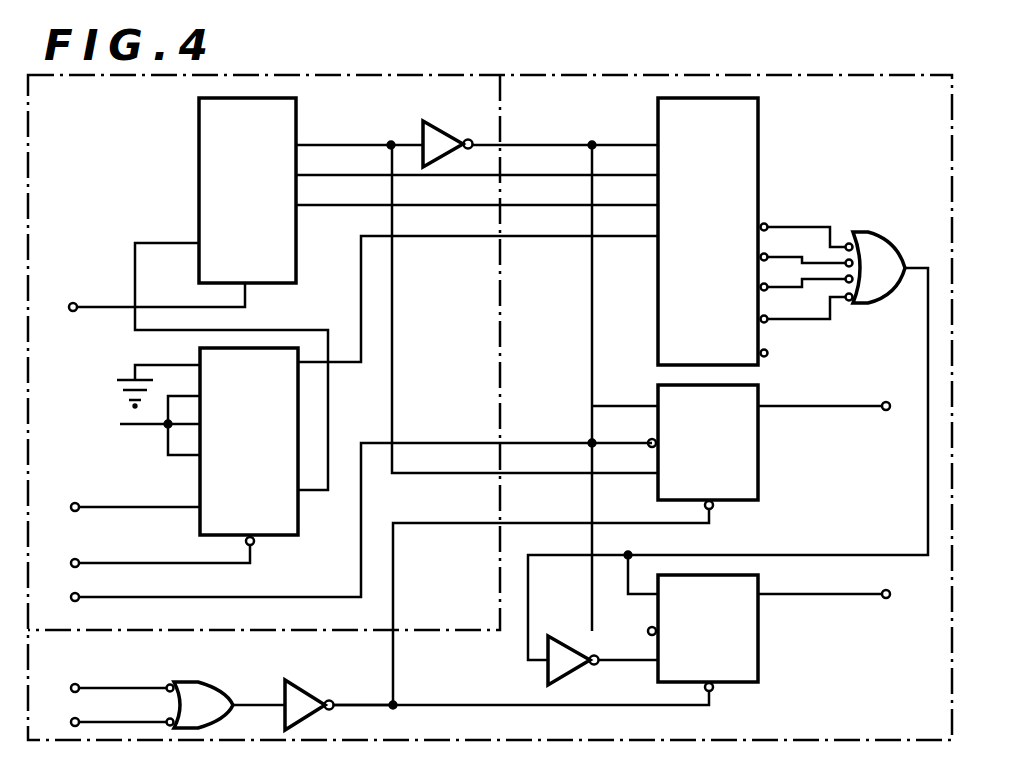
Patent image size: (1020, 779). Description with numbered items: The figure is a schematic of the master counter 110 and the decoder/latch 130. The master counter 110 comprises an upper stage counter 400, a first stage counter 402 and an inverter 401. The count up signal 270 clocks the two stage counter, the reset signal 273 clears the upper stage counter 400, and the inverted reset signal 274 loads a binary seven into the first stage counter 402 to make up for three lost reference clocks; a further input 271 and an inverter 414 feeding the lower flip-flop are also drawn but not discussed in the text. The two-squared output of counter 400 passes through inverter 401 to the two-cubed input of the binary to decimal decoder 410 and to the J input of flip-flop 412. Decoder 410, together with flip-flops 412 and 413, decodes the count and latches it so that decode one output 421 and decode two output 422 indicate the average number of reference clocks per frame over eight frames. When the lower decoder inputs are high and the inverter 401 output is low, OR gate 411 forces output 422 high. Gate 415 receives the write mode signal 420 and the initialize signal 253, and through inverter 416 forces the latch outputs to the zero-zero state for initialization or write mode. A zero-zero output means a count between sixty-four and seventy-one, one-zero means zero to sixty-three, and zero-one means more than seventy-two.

The master counter 110 is at (431, 78).
The decoder/latch 130 is at (884, 76).
The counter 400 is at (297, 104).
The inverter 401 is at (446, 122).
The counter 402 is at (276, 543).
The binary to decimal decoder 410 is at (759, 112).
The OR gate 411 is at (866, 234).
The flip-flop 412 is at (759, 455).
The flip-flop 413 is at (759, 635).
The inverter 414 is at (570, 677).
The gate 415 is at (212, 668).
The inverter 416 is at (296, 668).
The reset signal 273 is at (73, 303).
The count up signal 270 is at (73, 504).
The inverted reset signal 274 is at (73, 559).
The clock input terminal 271 is at (73, 601).
The write mode signal 420 is at (73, 684).
The initialize signal 253 is at (73, 718).
The decode one output 421 is at (884, 402).
The decode two output 422 is at (884, 598).